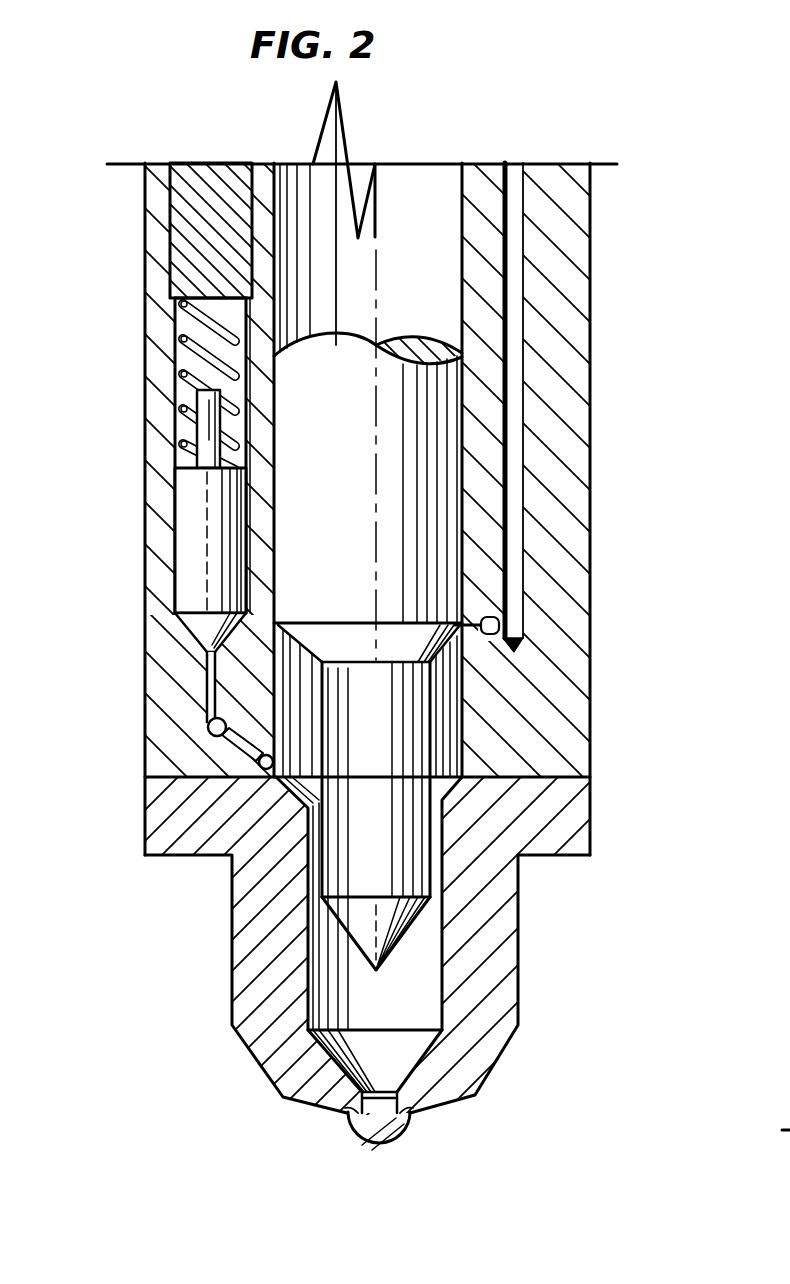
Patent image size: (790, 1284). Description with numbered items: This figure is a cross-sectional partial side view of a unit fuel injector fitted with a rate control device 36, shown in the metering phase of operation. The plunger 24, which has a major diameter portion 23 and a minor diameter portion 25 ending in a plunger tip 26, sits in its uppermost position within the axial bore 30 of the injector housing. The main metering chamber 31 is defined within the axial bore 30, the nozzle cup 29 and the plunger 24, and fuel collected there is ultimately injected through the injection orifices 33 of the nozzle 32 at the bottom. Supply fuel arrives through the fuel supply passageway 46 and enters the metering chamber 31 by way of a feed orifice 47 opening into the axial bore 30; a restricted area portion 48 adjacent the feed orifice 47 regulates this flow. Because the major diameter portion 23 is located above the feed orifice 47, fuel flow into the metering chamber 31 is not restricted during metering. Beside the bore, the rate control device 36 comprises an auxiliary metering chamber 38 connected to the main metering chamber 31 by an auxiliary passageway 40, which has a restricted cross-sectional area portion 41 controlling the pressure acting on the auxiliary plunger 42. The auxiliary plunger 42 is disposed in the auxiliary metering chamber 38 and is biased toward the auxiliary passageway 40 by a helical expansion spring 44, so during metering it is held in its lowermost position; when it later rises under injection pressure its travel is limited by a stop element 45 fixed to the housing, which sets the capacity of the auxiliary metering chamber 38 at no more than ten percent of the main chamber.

The major diameter portion 23 is at (440, 540).
The plunger 24 is at (358, 591).
The minor diameter portion 25 is at (405, 820).
The plunger tip 26 is at (397, 940).
The nozzle cup 29 is at (505, 912).
The axial bore 30 is at (456, 705).
The main metering chamber 31 is at (463, 1040).
The nozzle 32 is at (406, 1146).
The injection orifices 33 is at (358, 1116).
The rate control device 36 is at (190, 516).
The auxiliary metering chamber 38 is at (185, 418).
The auxiliary passageway 40 is at (208, 724).
The restricted cross-sectional area portion 41 is at (262, 752).
The auxiliary plunger 42 is at (195, 582).
The helical expansion spring 44 is at (178, 343).
The stop element 45 is at (190, 226).
The fuel supply passageway 46 is at (520, 308).
The feed orifice 47 is at (458, 650).
The restricted area portion 48 is at (492, 628).